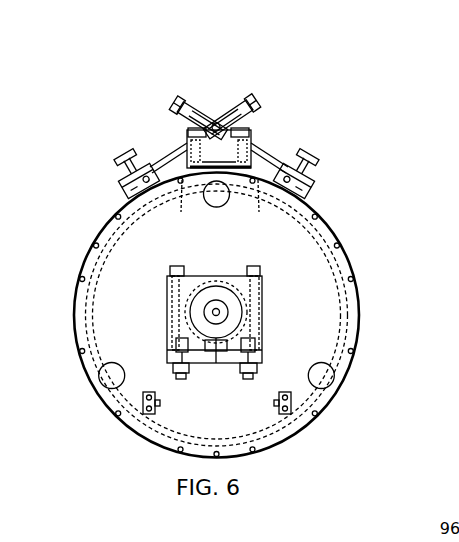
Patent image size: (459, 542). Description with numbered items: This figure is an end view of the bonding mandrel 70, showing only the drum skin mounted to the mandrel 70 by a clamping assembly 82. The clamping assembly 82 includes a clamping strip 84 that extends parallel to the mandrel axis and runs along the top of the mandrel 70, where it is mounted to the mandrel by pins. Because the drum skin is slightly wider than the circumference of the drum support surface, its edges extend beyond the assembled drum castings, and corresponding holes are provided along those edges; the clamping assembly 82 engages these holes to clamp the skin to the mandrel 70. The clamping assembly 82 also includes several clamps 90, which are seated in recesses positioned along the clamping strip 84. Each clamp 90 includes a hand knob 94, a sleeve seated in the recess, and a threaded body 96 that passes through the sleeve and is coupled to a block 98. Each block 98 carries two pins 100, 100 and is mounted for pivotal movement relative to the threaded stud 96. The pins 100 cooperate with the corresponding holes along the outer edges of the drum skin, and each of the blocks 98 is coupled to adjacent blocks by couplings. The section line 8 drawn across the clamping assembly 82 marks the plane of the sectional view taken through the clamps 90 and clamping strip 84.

The section line 8- 8 is at (272, 60).
The bonding mandrel 70 is at (78, 215).
The clamping assembly 82 is at (127, 91).
The clamping strip 84 is at (187, 141).
The clamp 90 is at (181, 98).
The hand knob 94 is at (192, 99).
The threaded body 96 is at (268, 161).
The block 98 is at (128, 190).
The pin 100 is at (219, 206).